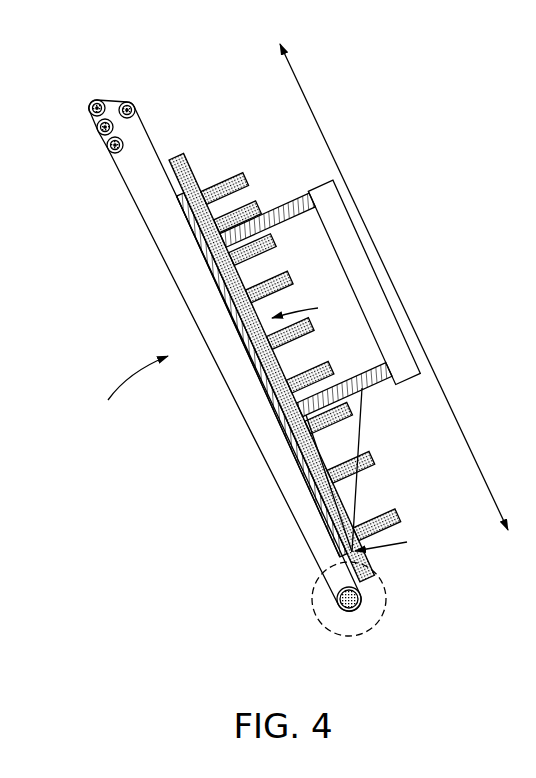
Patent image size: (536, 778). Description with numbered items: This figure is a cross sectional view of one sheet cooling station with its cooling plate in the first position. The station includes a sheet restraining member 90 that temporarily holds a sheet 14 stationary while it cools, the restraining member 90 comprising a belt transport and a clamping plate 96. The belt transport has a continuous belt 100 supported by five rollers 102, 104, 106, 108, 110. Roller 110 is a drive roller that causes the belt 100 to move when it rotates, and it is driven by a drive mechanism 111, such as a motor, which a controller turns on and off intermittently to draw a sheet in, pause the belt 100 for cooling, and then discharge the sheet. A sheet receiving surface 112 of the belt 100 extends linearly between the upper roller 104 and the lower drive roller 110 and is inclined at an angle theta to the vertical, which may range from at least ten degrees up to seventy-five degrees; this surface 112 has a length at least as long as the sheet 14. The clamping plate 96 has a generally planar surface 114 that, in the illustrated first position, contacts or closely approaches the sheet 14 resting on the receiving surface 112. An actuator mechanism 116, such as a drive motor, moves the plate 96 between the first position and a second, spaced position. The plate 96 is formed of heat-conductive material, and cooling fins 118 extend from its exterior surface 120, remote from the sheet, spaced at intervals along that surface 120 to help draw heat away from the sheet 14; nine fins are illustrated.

The sheet 14 is at (213, 284).
The sheet restraining member 90 is at (269, 332).
The clamping plate 96 is at (306, 304).
The continuous belt 100 is at (277, 477).
The roller 102 is at (95, 99).
The roller 104 is at (123, 98).
The roller 106 is at (96, 122).
The roller 108 is at (108, 146).
The drive roller 110 is at (388, 585).
The drive mechanism 111 is at (312, 607).
The sheet receiving surface 112 is at (396, 542).
The planar surface 114 is at (253, 363).
The actuator mechanism 116 is at (360, 222).
The cooling fins 118 is at (258, 203).
The exterior surface 120 is at (192, 160).